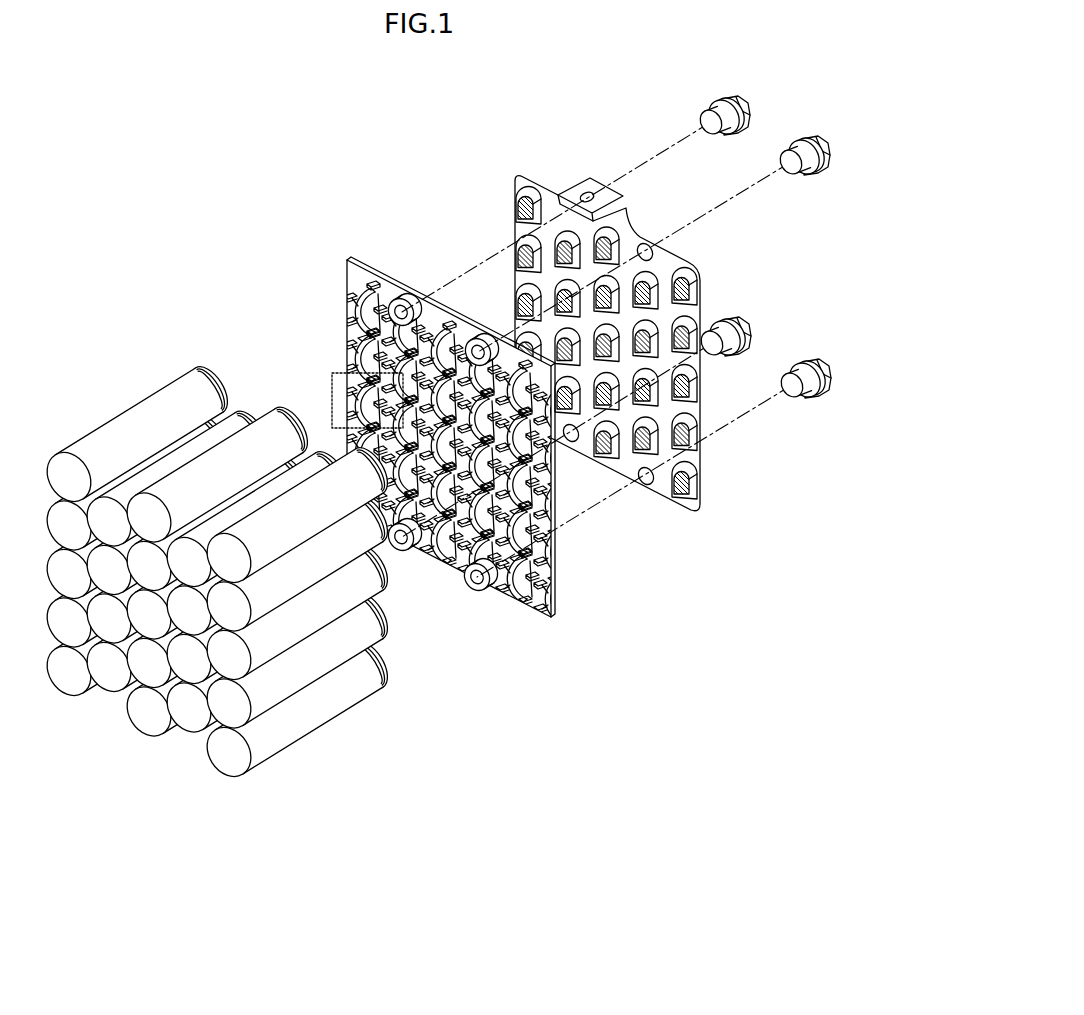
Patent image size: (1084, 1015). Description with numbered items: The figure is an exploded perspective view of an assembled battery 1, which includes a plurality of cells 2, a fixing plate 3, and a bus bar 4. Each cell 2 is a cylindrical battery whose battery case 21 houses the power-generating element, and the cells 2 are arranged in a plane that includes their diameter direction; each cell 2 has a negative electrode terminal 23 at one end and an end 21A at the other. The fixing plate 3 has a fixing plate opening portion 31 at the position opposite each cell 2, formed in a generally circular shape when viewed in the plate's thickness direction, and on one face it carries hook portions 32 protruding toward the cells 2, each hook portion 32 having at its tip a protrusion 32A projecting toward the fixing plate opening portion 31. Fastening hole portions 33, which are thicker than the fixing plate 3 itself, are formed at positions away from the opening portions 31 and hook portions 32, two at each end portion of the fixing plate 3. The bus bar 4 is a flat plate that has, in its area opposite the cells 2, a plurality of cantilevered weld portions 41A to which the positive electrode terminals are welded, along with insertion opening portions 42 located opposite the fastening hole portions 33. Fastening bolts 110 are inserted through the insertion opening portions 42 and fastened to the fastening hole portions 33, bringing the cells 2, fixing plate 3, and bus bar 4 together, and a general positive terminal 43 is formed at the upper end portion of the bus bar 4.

The assembled battery 1 is at (598, 731).
The cell 2 is at (308, 790).
The battery case 21 is at (303, 720).
The positive terminal end of battery cell 21A is at (384, 700).
The negative electrode terminal 23 is at (235, 755).
The fixing plate 3 is at (543, 563).
The fixing plate opening portion 31 is at (468, 338).
The hook portion 32 is at (347, 258).
The protrusion 32A is at (347, 285).
The fastening hole portion 33 is at (405, 296).
The bus bar 4 is at (693, 460).
The weld portion 41A is at (527, 202).
The insertion opening portion 42 is at (645, 243).
The general positive terminal 43 is at (592, 182).
The fastening bolt 110 is at (740, 100).